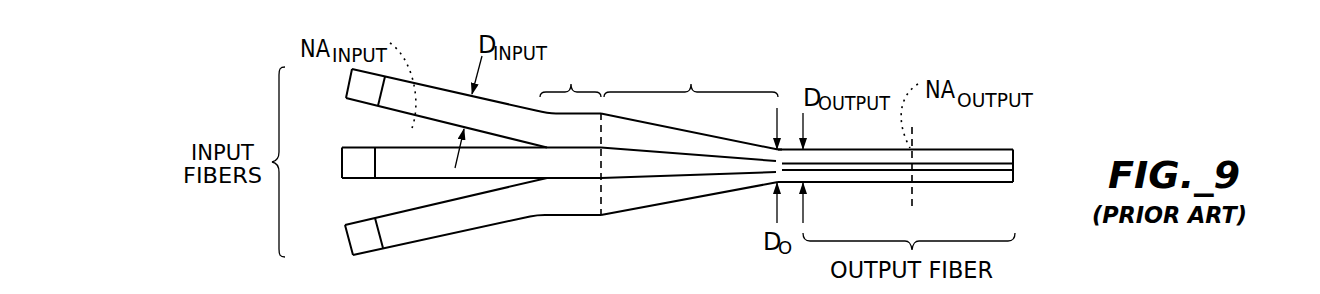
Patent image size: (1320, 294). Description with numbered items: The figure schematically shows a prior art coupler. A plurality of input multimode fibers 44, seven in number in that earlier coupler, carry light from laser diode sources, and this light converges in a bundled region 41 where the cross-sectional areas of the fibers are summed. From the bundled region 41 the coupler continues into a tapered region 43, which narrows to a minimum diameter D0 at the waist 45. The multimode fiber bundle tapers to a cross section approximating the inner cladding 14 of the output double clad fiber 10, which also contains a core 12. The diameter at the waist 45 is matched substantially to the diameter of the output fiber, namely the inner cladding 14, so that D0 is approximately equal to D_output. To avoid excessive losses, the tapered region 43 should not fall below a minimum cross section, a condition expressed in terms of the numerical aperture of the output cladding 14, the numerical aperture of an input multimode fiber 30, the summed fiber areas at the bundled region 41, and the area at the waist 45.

The double clad fiber 10 is at (923, 150).
The core 12 is at (965, 166).
The inner cladding 14 is at (1013, 160).
The input multimode fiber 30 is at (462, 93).
The bundled region 41 is at (570, 136).
The tapered region 43 is at (689, 136).
The waist 45 is at (780, 149).
The input multimode fibers 44 is at (444, 148).